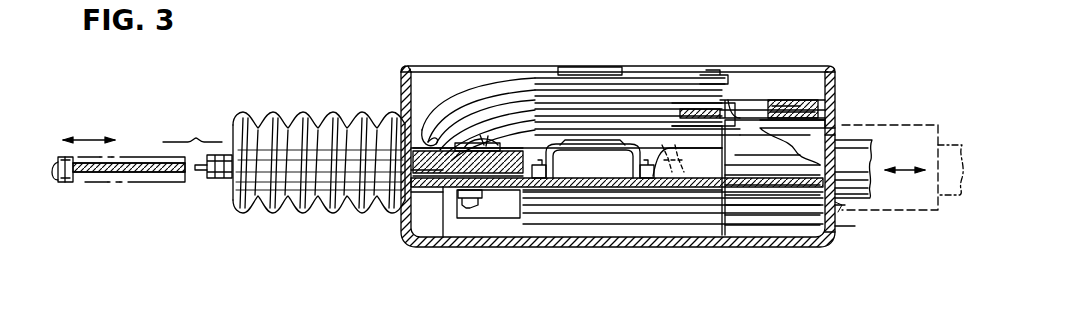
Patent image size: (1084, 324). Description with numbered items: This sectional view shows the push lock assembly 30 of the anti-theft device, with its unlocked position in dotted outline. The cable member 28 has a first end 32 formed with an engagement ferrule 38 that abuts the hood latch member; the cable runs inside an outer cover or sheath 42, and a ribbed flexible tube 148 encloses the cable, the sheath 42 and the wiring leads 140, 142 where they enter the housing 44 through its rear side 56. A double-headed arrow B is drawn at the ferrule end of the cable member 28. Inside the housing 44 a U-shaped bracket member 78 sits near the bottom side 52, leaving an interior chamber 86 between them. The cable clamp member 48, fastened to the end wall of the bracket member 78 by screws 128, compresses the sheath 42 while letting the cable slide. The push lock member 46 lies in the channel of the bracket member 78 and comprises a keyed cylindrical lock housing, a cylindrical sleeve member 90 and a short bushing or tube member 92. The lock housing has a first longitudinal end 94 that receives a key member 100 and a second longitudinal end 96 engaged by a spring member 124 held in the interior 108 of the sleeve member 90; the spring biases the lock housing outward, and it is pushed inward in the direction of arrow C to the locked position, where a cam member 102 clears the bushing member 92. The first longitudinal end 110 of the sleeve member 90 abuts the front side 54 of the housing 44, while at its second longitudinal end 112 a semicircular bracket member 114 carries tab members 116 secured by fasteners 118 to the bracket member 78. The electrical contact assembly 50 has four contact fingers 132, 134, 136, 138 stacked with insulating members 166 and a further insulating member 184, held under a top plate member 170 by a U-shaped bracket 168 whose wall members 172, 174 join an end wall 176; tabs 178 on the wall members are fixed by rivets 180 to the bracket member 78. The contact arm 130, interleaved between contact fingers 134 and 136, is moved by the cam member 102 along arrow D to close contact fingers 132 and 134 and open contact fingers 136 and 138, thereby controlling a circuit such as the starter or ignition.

The push lock assembly 30 is at (288, 25).
The engagement ferrule 38 is at (60, 155).
The cable member 28 is at (133, 163).
The first end 32 is at (78, 180).
The direction arrow B is at (96, 138).
The outer cover or sheath 42 is at (215, 180).
The flexible tube 148 is at (240, 118).
The bottom side 52 is at (756, 240).
The top plate member 170 is at (578, 68).
The electrical contact assembly 50 is at (614, 66).
The insulating members 166 is at (567, 88).
The insulating member 184 is at (648, 130).
The contact finger 136 is at (680, 110).
The contact finger 138 is at (662, 104).
The contact finger 134 is at (688, 100).
The contact finger 132 is at (736, 100).
The contact arm 130 is at (752, 110).
The arrow D is at (738, 115).
The wiring lead 142 is at (458, 86).
The wiring lead 140 is at (466, 96).
The screws 128 is at (488, 133).
The rear side 56 is at (398, 72).
The cable clamp member 48 is at (478, 150).
The tab members 116 is at (458, 193).
The fastener 118 is at (445, 200).
The bracket member 78 is at (468, 187).
The bracket member 114 is at (480, 205).
The second longitudinal end 112 is at (512, 210).
The rivet 180 is at (516, 225).
The wall member 172 is at (534, 192).
The tab 178 is at (561, 230).
The bracket 168 is at (596, 150).
The end wall 176 is at (608, 160).
The wall member 174 is at (655, 172).
The interior chamber 86 is at (680, 170).
The second longitudinal end 96 is at (700, 196).
The spring member 124 is at (672, 212).
The sleeve member 90 is at (715, 200).
The bushing or tube member 92 is at (758, 150).
The cam member 102 is at (780, 103).
The interior 108 is at (805, 100).
The first longitudinal end 110 is at (828, 112).
The key member 100 is at (852, 148).
The arrow C is at (910, 166).
The first longitudinal end 94 is at (870, 207).
The push lock member 46 is at (866, 200).
The front side 54 is at (848, 226).
The housing 44 is at (830, 226).